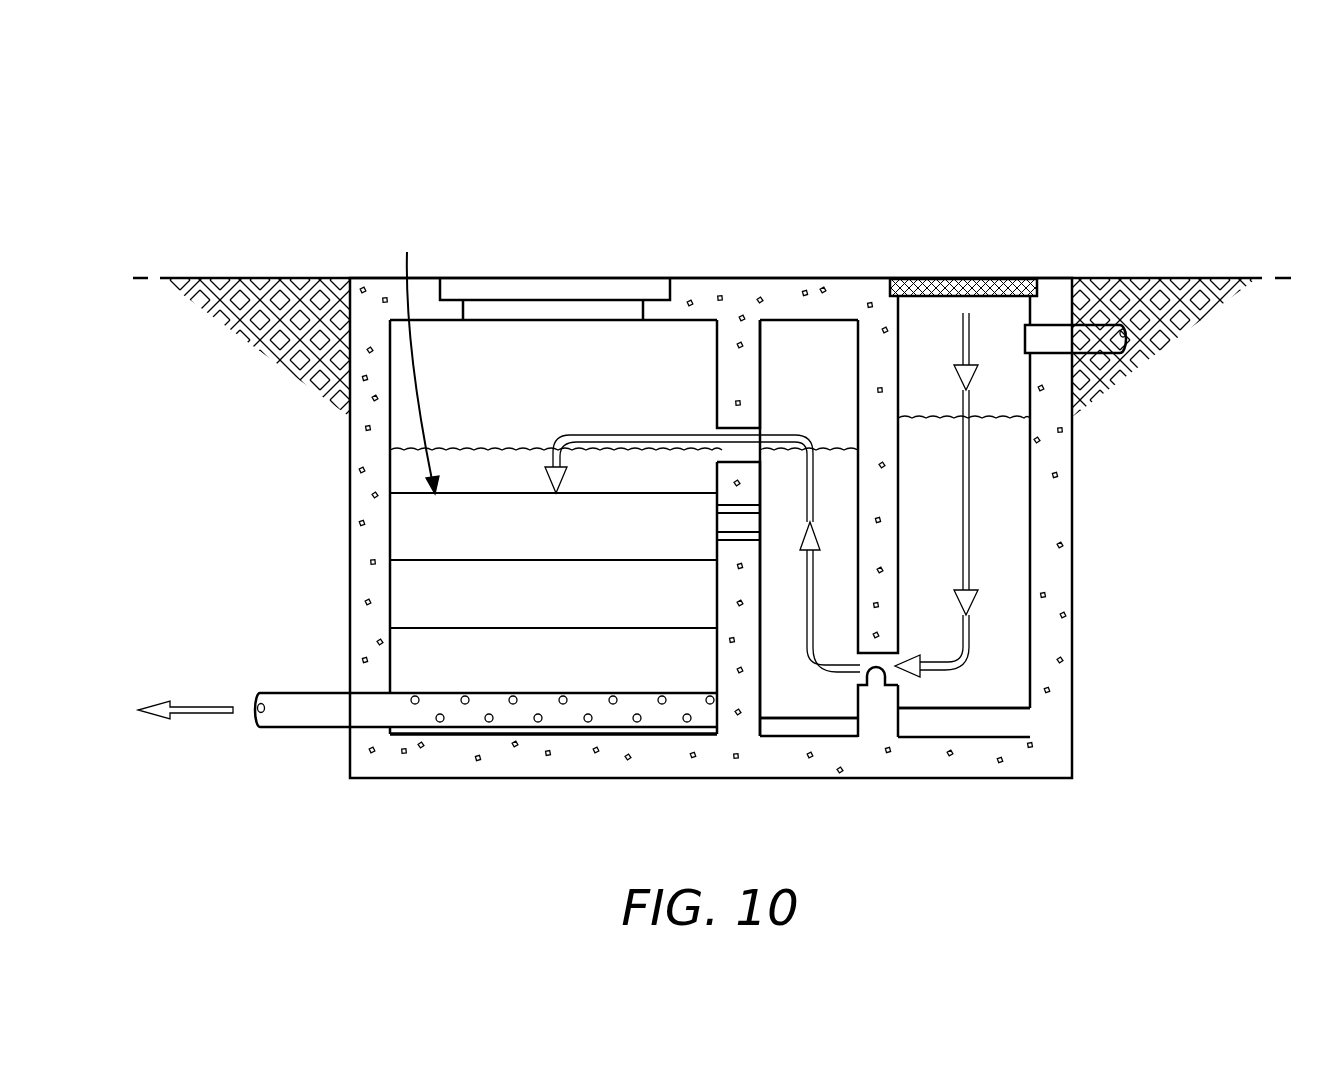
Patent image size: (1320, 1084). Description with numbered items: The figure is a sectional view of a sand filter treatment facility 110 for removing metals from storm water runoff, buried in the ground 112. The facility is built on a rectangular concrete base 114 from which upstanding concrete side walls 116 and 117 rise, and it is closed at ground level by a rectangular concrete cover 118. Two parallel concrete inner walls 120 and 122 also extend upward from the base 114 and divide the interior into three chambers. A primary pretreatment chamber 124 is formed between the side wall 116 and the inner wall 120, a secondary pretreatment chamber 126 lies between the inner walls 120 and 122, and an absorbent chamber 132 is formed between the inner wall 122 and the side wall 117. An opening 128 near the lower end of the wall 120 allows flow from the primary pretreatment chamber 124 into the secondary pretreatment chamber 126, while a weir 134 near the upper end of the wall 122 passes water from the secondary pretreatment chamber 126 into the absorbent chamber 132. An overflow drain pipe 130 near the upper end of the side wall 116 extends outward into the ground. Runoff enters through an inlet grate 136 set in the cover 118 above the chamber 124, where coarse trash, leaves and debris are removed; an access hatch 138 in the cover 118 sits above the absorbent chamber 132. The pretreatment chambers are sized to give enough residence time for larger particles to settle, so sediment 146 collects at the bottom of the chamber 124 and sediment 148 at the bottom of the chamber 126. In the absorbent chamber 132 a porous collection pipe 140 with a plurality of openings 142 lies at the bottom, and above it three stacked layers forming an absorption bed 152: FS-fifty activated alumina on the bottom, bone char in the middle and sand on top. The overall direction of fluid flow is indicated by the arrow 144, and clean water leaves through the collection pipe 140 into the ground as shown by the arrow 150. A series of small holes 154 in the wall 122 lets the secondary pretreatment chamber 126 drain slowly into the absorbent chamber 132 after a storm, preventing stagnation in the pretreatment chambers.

The sand filter treatment facility 110 is at (614, 228).
The ground 112 is at (232, 278).
The concrete base 114 is at (578, 780).
The side wall 116 is at (1075, 458).
The side wall 117 is at (350, 490).
The concrete cover 118 is at (693, 278).
The inner wall 120 is at (900, 495).
The inner wall 122 is at (760, 562).
The primary pretreatment chamber 124 is at (1005, 560).
The secondary pretreatment chamber 126 is at (784, 386).
The opening 128 is at (872, 683).
The overflow drain pipe 130 is at (1050, 335).
The absorbent chamber 132 is at (530, 391).
The weir 134 is at (717, 438).
The inlet grate 136 is at (945, 285).
The access hatch 138 is at (524, 290).
The porous collection pipe 140 is at (295, 693).
The openings 142 is at (468, 702).
The arrow 144 is at (970, 645).
The sediment 146 is at (968, 725).
The sediment 148 is at (805, 728).
The arrow 150 is at (198, 705).
The absorption bed 152 is at (408, 358).
The small holes 154 is at (738, 538).